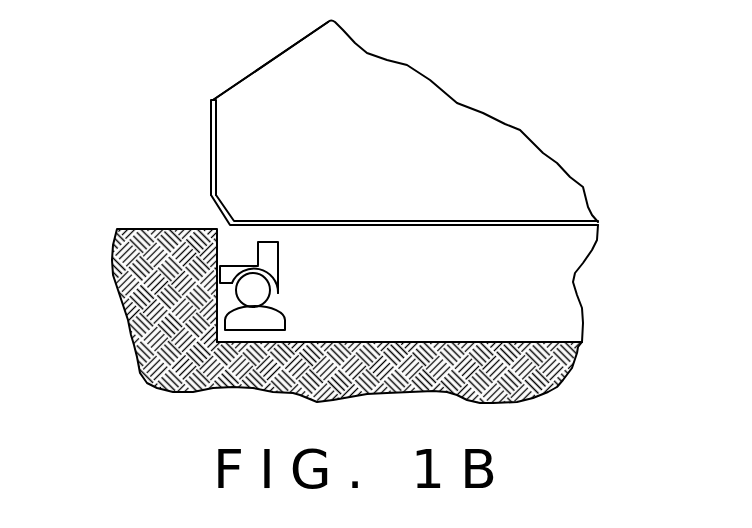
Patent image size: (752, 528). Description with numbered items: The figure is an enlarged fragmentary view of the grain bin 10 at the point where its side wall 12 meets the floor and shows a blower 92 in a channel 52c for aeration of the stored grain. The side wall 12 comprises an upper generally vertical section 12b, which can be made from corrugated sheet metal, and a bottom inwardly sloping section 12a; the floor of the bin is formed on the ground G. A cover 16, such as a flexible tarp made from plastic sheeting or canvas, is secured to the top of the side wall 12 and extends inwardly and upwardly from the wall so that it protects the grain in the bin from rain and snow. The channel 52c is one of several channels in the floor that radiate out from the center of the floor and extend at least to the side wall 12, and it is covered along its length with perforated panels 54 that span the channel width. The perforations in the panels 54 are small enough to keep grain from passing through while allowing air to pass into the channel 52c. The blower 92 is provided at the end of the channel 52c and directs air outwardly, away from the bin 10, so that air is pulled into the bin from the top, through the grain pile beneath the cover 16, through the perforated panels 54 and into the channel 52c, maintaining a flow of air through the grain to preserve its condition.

The grain bin 10 is at (407, 43).
The cover 16 is at (281, 53).
The side wall 12 is at (155, 161).
The upper generally vertical section 12b is at (212, 125).
The bottom inwardly sloping section 12a is at (212, 198).
The perforated panels 54 is at (366, 221).
The channel 52c is at (500, 307).
The ground G is at (140, 280).
The blower 92 is at (295, 280).